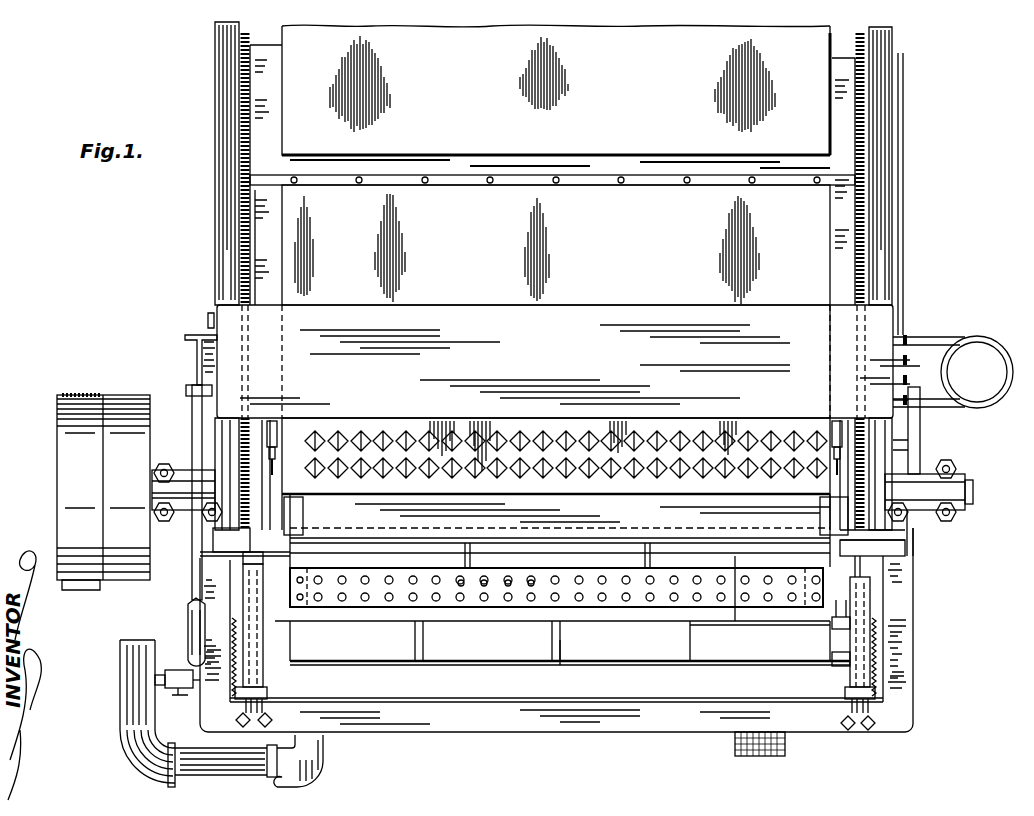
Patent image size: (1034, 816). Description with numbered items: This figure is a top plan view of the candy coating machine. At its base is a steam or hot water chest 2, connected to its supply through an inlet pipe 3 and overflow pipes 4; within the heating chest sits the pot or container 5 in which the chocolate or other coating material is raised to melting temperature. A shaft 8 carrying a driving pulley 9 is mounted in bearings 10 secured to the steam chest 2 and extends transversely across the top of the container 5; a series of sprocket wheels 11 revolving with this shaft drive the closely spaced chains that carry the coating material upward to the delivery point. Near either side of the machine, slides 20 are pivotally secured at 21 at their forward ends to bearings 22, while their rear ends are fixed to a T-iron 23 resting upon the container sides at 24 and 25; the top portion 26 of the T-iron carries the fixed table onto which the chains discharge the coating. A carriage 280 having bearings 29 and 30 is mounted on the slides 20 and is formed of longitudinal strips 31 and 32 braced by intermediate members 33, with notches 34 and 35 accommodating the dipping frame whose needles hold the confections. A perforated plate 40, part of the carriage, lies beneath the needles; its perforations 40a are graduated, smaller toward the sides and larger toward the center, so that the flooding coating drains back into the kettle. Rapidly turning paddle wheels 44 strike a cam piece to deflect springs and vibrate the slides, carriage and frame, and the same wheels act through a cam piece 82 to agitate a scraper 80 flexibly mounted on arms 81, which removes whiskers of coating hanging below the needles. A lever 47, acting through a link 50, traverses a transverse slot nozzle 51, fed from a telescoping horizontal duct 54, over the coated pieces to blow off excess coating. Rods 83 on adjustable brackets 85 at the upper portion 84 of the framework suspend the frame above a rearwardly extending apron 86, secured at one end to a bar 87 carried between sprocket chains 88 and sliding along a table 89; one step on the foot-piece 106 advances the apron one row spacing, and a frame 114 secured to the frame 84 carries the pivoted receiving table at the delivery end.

The steam or hot water chest 2 is at (452, 735).
The inlet pipe 3 is at (178, 675).
The overflow pipes 4 is at (320, 755).
The pot or container 5 is at (682, 710).
The shaft 8 is at (966, 493).
The driving connection 9 is at (60, 440).
The bearings 10 is at (178, 478).
The sprocket wheels 11 is at (912, 479).
The slides 20 is at (220, 570).
The pivotal mounting 21 is at (240, 702).
The bearings 22 is at (856, 726).
The T-iron 23 is at (896, 559).
The rest point on container side 24 is at (204, 556).
The rest point on container side 25 is at (910, 537).
The top portion of T-iron 26 is at (213, 541).
The bearing 29 is at (262, 616).
The bearing 30 is at (880, 603).
The longitudinal strip 31 is at (764, 623).
The longitudinal strip 32 is at (790, 663).
The intermediate members 33 is at (415, 650).
The notch 34 is at (298, 666).
The notch 35 is at (822, 665).
The perforated plate 40 is at (592, 600).
The perforations 40a is at (462, 601).
The paddle wheels 44 is at (302, 524).
The lever 47 is at (192, 616).
The link 50 is at (196, 426).
The transverse elongated nozzle 51 is at (732, 603).
The horizontal duct 54 is at (568, 518).
The scraper 80 is at (651, 554).
The arms 81 is at (468, 555).
The cam piece 82 is at (248, 559).
The rods 83 is at (275, 458).
The upper portion of the framework 84 is at (230, 358).
The brackets 85 is at (278, 436).
The apron 86 is at (478, 152).
The bar 87 is at (770, 182).
The sprocket chains 88 is at (244, 237).
The table 89 is at (846, 128).
The foot-piece 106 is at (752, 761).
The frame 114 is at (885, 210).
The carriage 280 is at (562, 661).